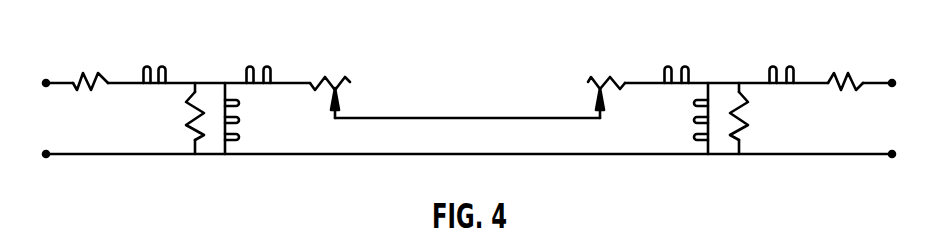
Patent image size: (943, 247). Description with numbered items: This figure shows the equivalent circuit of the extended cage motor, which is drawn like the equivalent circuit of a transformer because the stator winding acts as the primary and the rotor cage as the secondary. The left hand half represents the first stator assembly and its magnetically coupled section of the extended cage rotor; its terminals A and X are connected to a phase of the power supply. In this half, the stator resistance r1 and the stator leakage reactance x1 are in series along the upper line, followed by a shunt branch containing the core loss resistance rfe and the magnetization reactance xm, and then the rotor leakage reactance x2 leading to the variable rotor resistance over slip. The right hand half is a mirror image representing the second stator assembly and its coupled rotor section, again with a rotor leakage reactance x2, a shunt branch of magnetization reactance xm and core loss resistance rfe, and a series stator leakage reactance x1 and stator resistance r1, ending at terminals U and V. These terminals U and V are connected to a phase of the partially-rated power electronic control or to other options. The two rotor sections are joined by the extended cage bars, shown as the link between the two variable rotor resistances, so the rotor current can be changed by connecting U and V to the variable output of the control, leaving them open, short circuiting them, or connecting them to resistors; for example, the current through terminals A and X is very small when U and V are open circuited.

The stator resistance r1 is at (471, 60).
The stator leakage reactance x1 is at (469, 57).
The rotor leakage reactance x2 is at (469, 57).
The core loss resistance rfe is at (468, 118).
The magnetization reactance xm is at (466, 118).
The terminal A is at (32, 85).
The terminal X is at (32, 155).
The terminal U is at (904, 85).
The terminal V is at (904, 155).